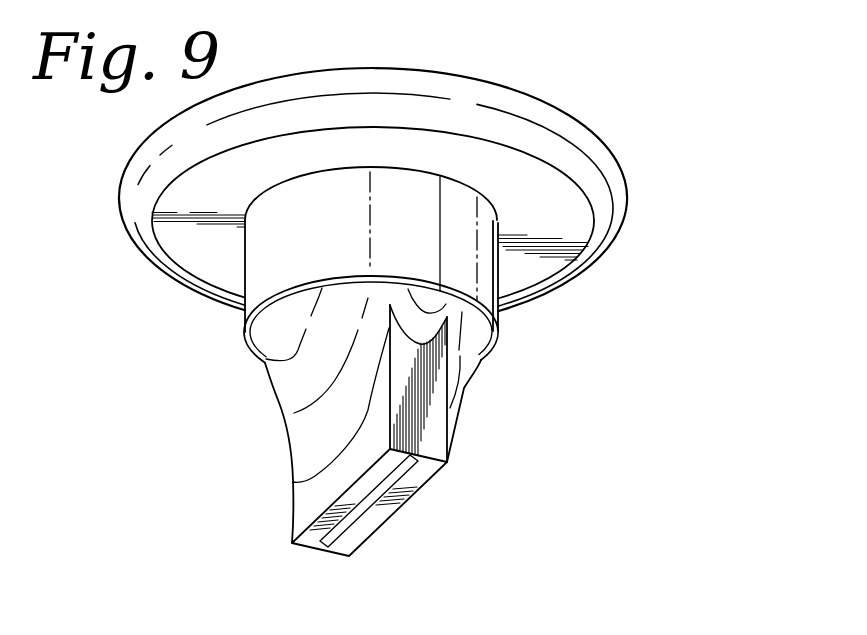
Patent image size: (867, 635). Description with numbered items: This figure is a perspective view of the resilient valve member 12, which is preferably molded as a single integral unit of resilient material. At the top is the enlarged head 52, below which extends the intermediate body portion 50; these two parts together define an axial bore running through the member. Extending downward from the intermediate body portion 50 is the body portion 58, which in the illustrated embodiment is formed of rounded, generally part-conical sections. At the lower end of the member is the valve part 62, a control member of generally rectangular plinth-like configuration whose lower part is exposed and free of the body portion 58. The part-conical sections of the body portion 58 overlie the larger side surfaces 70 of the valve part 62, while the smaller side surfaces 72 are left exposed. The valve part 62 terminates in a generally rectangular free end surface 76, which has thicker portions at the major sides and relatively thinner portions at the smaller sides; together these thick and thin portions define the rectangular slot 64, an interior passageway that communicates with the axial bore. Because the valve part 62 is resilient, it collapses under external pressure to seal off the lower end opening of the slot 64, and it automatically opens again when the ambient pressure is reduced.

The resilient valve member 12 is at (416, 66).
The enlarged head 52 is at (610, 177).
The intermediate body portion 50 is at (273, 237).
The body portion 58 is at (283, 377).
The larger side surfaces 70 is at (305, 495).
The smaller side surfaces 72 is at (435, 438).
The valve part 62 is at (448, 462).
The free end surface 76 is at (408, 482).
The slot 64 is at (320, 545).